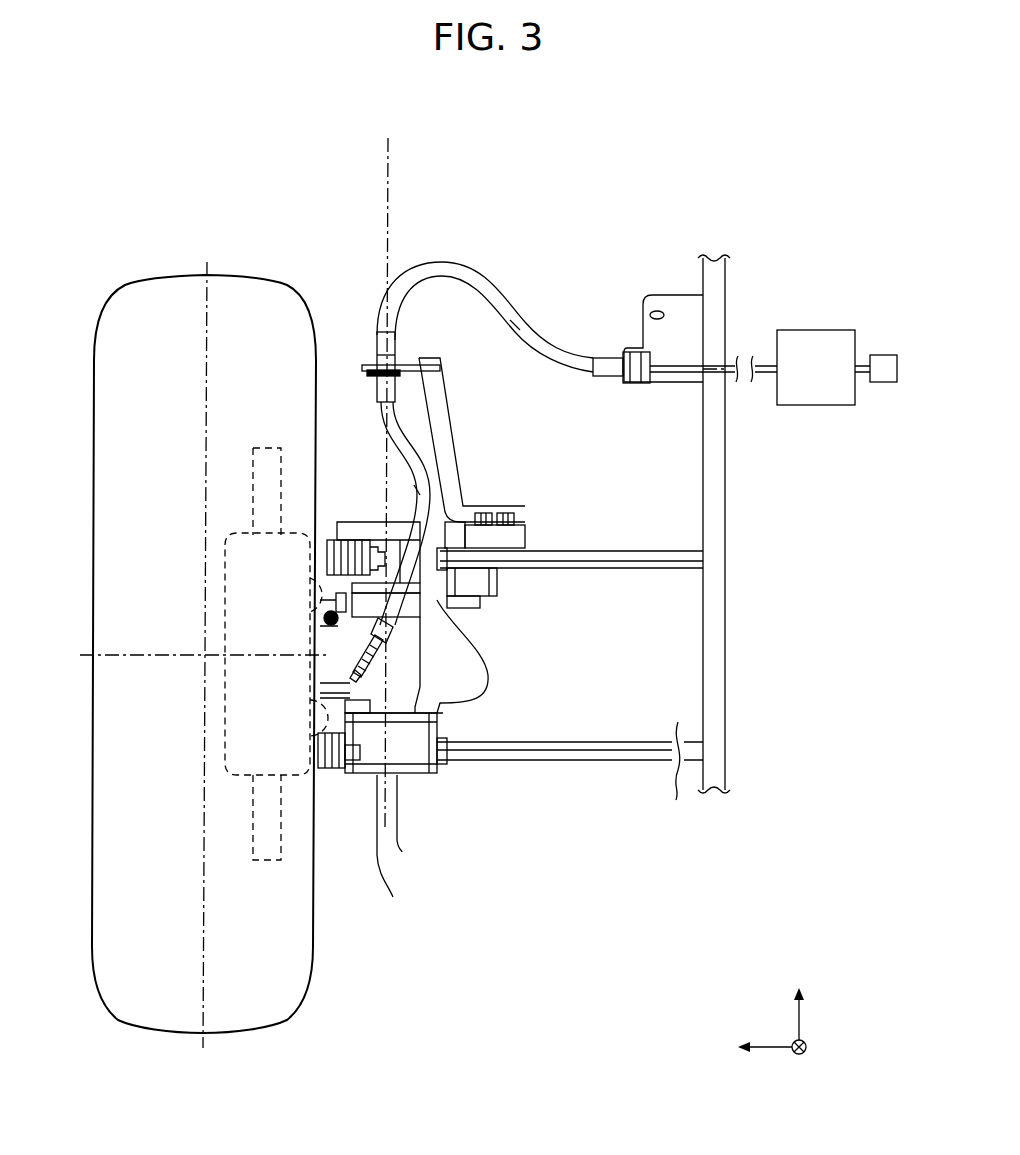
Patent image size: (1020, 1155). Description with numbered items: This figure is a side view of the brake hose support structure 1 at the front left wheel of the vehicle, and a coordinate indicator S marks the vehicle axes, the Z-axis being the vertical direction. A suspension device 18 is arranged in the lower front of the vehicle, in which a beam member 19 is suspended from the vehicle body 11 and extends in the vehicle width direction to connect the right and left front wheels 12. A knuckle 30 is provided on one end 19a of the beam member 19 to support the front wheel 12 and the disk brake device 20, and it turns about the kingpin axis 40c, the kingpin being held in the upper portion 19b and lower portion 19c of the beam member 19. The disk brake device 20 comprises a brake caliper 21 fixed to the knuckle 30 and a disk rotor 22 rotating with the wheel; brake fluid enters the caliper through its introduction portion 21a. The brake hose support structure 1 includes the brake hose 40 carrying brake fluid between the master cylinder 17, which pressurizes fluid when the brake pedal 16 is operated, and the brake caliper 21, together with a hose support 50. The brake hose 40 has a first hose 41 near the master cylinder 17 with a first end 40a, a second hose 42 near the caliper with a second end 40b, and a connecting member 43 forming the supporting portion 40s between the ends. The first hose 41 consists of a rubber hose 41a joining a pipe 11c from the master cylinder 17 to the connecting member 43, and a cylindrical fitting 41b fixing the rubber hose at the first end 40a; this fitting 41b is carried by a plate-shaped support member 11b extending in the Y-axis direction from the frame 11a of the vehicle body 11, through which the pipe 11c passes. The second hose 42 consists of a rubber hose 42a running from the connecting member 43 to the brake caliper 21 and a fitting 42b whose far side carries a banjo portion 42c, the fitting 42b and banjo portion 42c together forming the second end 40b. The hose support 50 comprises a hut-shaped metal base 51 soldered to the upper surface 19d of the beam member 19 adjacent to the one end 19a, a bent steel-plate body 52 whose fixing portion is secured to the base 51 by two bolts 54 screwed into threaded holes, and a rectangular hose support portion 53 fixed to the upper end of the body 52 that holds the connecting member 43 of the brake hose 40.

The brake hose support structure 1 is at (712, 110).
The vehicle body 11 is at (680, 483).
The frame 11a is at (712, 278).
The support member 11b is at (676, 300).
The pipe 11c is at (680, 378).
The front wheel 12 is at (240, 1033).
The brake pedal 16 is at (882, 382).
The master cylinder 17 is at (815, 405).
The suspension device 18 is at (576, 773).
The beam member 19 is at (576, 773).
The one end of the beam member 19a is at (492, 574).
The upper portion of the beam member 19b is at (455, 600).
The lower portion of the beam member 19c is at (442, 745).
The upper surface of the beam member 19d is at (624, 551).
The disk brake device 20 is at (320, 703).
The brake caliper 21 is at (393, 849).
The introduction portion 21a is at (332, 652).
The disk rotor 22 is at (281, 842).
The knuckle 30 is at (412, 698).
The brake hose 40 is at (503, 293).
The first end 40a is at (620, 346).
The second end 40b is at (241, 654).
The kingpin axis 40c is at (388, 152).
The supporting portion 40s is at (334, 319).
The first hose 41 is at (486, 283).
The rubber hose 41a is at (516, 326).
The fitting 41b is at (608, 377).
The second hose 42 is at (396, 459).
The rubber hose 42a is at (416, 490).
The fitting 42b is at (332, 600).
The banjo portion 42c is at (332, 675).
The connecting member 43 is at (370, 338).
The hose support 50 is at (472, 453).
The base 51 is at (525, 543).
The body 52 is at (447, 462).
The hose support portion 53 is at (405, 366).
The bolts 54 is at (505, 512).
The coordinate system S is at (800, 1018).